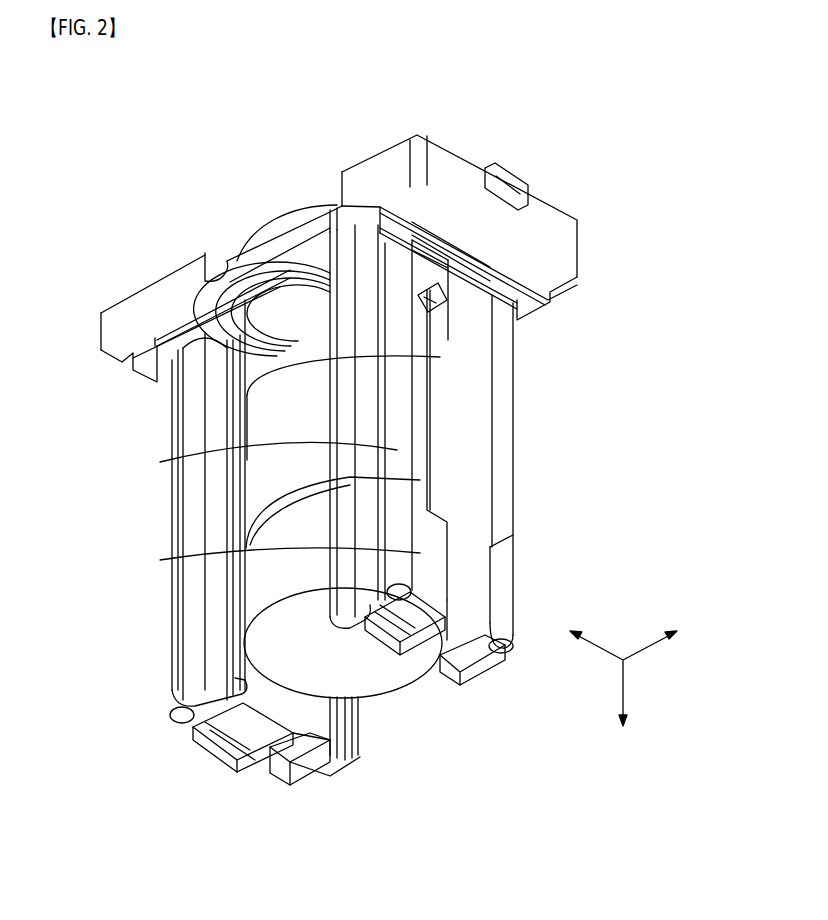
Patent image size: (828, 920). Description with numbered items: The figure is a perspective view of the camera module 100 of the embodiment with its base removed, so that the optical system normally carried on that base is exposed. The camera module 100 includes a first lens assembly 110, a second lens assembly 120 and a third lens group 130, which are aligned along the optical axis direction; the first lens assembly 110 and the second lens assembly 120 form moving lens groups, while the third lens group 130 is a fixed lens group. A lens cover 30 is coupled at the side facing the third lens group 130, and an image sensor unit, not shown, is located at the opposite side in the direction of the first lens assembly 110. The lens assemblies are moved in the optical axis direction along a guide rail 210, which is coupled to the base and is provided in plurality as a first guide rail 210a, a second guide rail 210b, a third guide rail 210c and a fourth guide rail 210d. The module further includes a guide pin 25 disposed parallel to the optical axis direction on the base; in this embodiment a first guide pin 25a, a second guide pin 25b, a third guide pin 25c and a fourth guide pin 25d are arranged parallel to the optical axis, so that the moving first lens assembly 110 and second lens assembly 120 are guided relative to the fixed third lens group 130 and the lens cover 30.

The camera module 100 is at (112, 162).
The lens cover 30 is at (173, 281).
The third lens group 130 is at (286, 279).
The second lens assembly 120 is at (298, 406).
The first lens assembly 110 is at (298, 528).
The guide pin 25 is at (95, 465).
The first guide pin 25a is at (290, 768).
The second guide pin 25b is at (172, 658).
The third guide pin 25c is at (160, 462).
The fourth guide pin 25d is at (160, 560).
The guide rail 210 is at (492, 883).
The first guide rail 210a is at (325, 768).
The second guide rail 210b is at (212, 694).
The third guide rail 210c is at (360, 607).
The fourth guide rail 210d is at (473, 690).